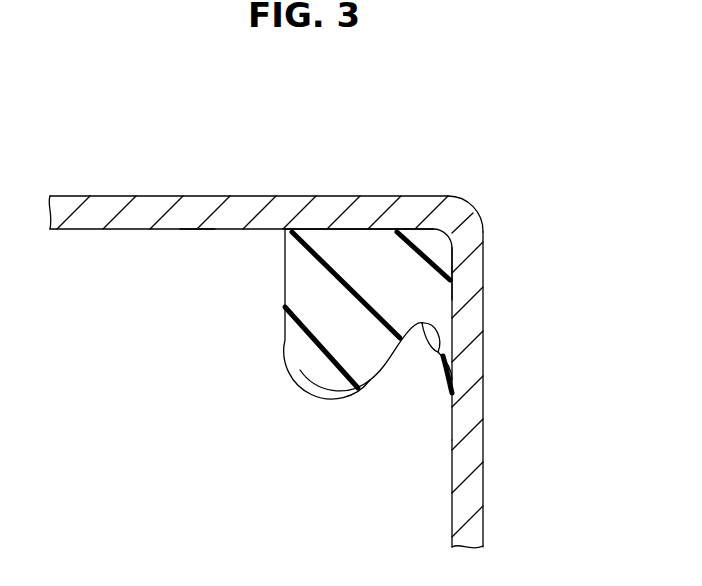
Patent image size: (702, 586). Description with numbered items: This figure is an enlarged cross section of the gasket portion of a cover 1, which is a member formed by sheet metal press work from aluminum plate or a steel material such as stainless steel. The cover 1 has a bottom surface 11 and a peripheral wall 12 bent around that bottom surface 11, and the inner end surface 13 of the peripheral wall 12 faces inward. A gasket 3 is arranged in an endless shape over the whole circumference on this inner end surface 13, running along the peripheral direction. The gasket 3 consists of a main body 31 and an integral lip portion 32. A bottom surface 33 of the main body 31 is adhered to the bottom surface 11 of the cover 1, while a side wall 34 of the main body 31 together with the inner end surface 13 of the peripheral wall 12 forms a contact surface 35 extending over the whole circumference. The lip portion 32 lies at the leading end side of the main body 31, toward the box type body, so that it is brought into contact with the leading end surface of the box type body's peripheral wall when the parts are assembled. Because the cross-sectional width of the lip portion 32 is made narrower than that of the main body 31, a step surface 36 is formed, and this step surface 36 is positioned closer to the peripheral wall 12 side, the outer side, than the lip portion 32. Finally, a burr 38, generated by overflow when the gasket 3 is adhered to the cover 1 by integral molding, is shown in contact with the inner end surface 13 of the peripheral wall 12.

The cover 1 is at (235, 213).
The bottom surface 11 is at (186, 229).
The peripheral wall 12 is at (468, 442).
The inner end surface 13 is at (453, 471).
The gasket 3 is at (367, 283).
The main body 31 is at (408, 265).
The lip portion 32 is at (330, 377).
The bottom surface 33 is at (360, 237).
The side wall 34 is at (452, 285).
The contact surface 35 is at (452, 258).
The step surface 36 is at (440, 350).
The burr 38 is at (452, 365).